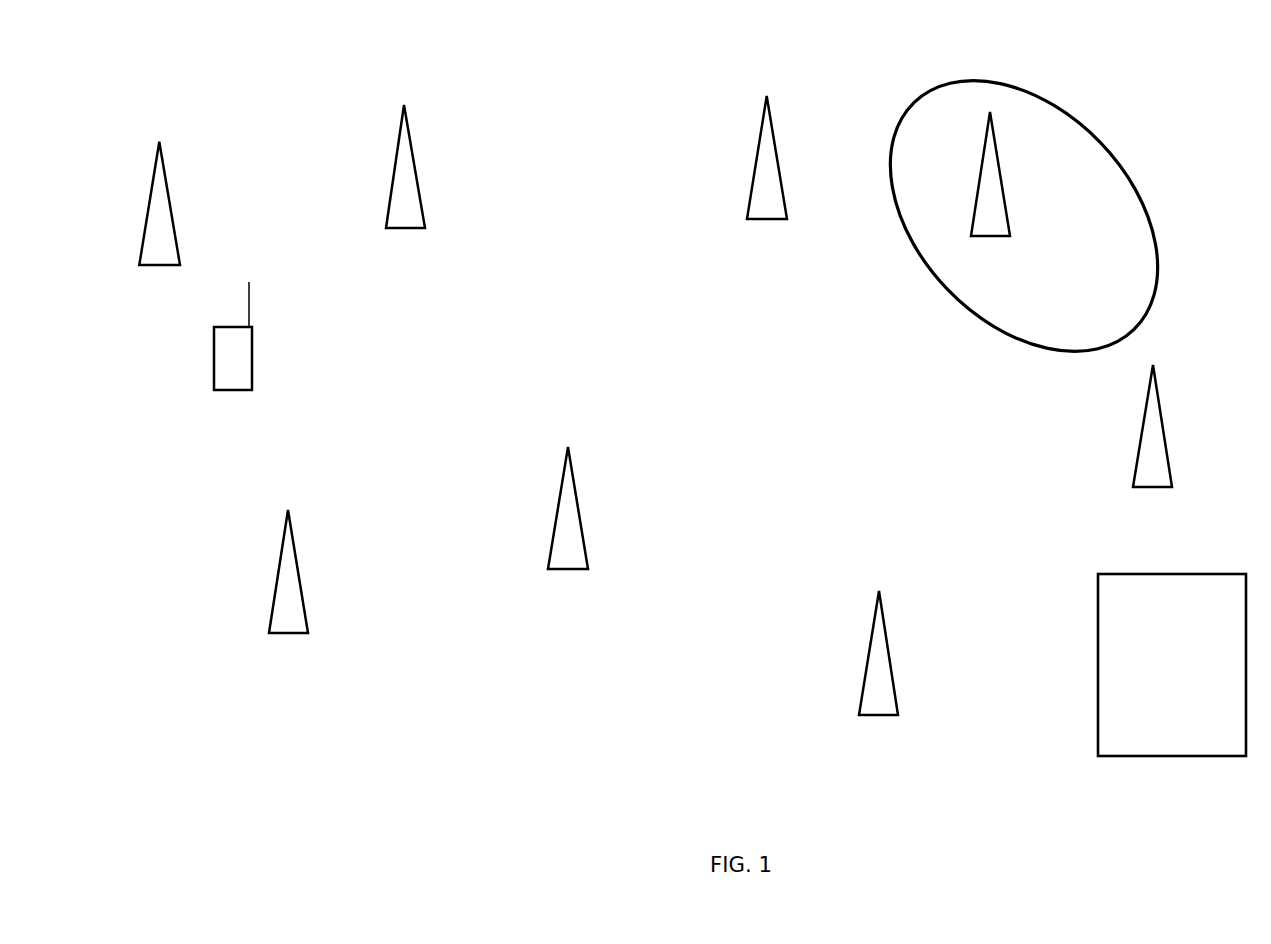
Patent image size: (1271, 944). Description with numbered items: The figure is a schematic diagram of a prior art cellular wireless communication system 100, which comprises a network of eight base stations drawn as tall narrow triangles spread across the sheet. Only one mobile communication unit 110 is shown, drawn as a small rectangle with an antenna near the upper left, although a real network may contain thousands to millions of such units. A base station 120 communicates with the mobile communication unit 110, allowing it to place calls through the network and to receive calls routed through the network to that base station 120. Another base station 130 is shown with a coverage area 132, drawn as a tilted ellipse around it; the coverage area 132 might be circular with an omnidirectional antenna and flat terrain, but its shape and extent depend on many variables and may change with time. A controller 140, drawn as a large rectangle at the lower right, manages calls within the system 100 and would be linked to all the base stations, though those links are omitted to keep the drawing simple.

The wireless communication system 100 is at (598, 59).
The mobile communication unit 110 is at (252, 360).
The base station 120 is at (179, 202).
The base station 130 is at (971, 177).
The coverage area 132 is at (1148, 212).
The controller 140 is at (1097, 636).